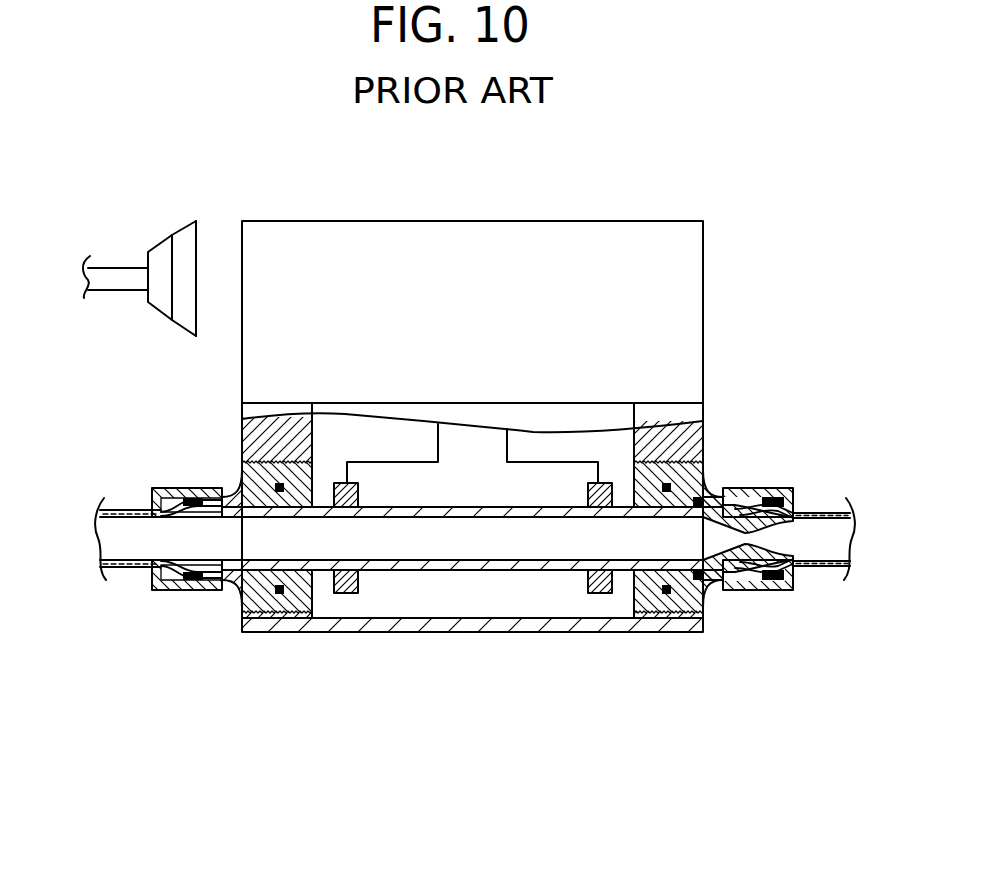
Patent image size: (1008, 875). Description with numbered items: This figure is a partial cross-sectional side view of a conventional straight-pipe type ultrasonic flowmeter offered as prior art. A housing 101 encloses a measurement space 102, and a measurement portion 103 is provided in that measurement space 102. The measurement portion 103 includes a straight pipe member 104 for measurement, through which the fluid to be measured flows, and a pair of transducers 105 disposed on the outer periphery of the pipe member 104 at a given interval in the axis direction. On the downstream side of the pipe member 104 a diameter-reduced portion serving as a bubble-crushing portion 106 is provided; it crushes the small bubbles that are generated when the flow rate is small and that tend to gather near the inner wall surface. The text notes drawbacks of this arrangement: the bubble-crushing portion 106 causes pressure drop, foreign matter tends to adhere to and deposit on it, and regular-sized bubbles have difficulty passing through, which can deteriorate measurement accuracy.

The housing 101 is at (668, 428).
The measurement space 102 is at (490, 600).
The measurement portion 103 is at (532, 715).
The pipe member 104 is at (410, 572).
The transducers 105 is at (345, 595).
The bubble-crushing portion 106 is at (740, 537).